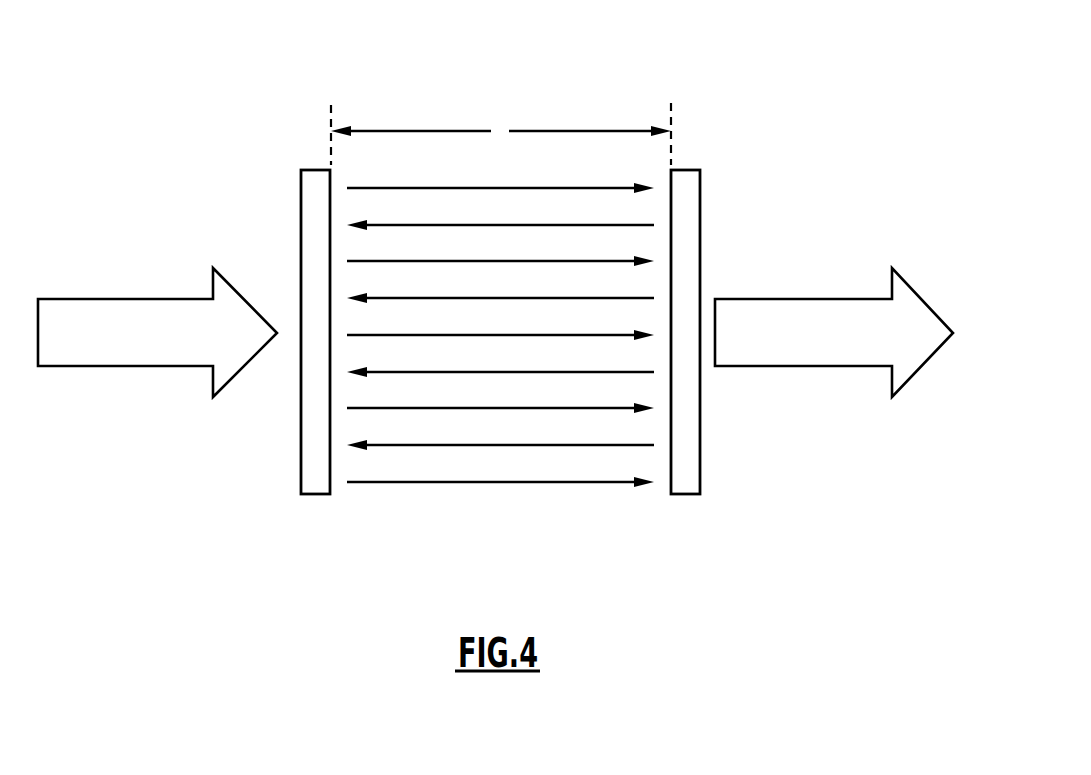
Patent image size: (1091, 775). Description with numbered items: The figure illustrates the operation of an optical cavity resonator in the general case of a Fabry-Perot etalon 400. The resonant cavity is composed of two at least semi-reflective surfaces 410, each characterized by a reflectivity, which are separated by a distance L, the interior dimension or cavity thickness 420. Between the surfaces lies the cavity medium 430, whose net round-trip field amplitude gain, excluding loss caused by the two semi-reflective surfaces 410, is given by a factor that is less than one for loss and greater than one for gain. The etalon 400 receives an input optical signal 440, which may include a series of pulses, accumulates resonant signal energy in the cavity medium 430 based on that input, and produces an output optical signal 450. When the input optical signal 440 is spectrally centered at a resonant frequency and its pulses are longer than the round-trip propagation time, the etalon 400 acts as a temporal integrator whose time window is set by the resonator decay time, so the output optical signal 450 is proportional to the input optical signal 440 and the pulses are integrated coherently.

The Fabry-Perot etalon 400 is at (785, 52).
The semi-reflective surfaces 410 is at (288, 220).
The cavity thickness 420 is at (428, 131).
The cavity medium 430 is at (501, 513).
The input optical signal 440 is at (124, 299).
The output optical signal 450 is at (778, 299).